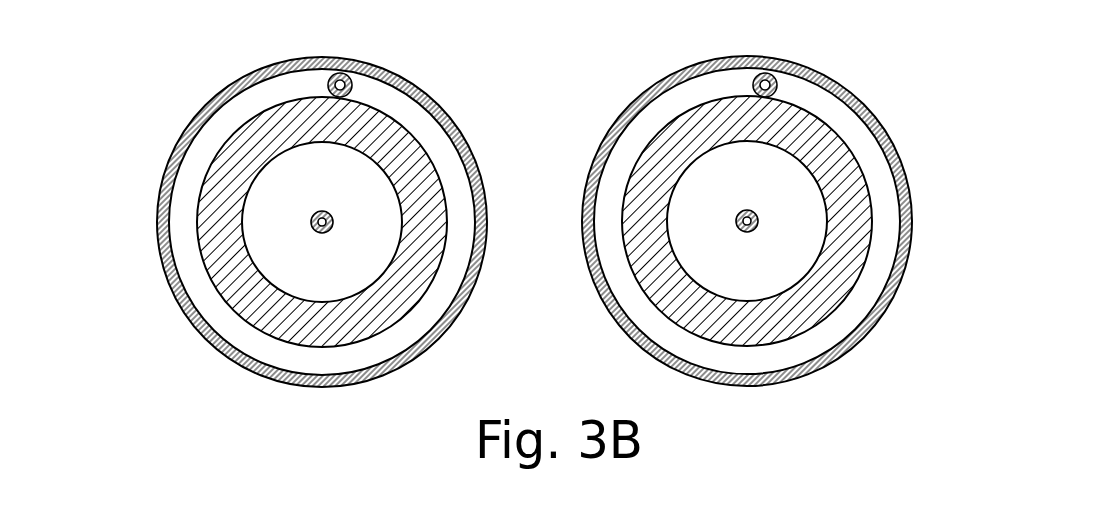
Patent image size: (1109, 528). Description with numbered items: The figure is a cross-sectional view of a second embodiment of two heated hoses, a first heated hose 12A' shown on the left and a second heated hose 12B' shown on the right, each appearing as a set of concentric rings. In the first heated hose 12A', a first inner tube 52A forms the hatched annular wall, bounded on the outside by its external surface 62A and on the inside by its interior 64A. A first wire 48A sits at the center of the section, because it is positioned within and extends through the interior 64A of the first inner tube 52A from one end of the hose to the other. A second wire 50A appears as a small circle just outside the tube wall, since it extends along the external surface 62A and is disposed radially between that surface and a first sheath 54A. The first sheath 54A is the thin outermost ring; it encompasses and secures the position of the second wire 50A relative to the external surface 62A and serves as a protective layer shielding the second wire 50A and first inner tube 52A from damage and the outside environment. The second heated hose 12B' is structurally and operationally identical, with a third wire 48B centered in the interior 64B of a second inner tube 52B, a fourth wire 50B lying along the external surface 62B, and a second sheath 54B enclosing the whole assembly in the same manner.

The first heated hose 12A' is at (277, 233).
The second heated hose 12B' is at (748, 212).
The first wire 48A is at (310, 218).
The third wire 48B is at (760, 219).
The second wire 50A is at (343, 76).
The fourth wire 50B is at (775, 76).
The first inner tube 52A is at (222, 254).
The second inner tube 52B is at (827, 290).
The first sheath 54A is at (218, 349).
The second sheath 54B is at (812, 371).
The external surface 62A is at (323, 347).
The external surface 62B is at (657, 312).
The interior 64A is at (342, 267).
The interior 64B is at (692, 232).